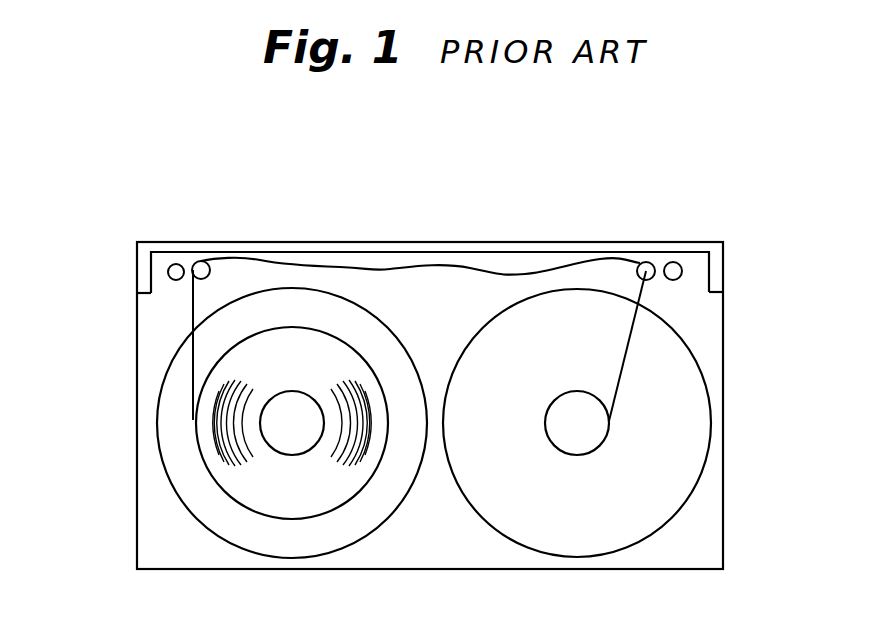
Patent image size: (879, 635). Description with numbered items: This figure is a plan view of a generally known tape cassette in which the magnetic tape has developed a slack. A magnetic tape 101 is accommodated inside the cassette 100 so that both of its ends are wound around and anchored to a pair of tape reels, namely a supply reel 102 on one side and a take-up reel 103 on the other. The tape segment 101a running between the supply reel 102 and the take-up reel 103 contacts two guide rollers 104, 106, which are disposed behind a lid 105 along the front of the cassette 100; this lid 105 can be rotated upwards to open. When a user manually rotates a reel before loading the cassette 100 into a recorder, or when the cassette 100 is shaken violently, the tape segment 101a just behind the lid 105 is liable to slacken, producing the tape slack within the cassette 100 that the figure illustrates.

The cassette 100 is at (137, 366).
The magnetic tape 101 is at (192, 322).
The tape segment 101a is at (381, 268).
The supply reel 102 is at (173, 487).
The take-up reel 103 is at (702, 471).
The guide roller 104 is at (203, 262).
The lid 105 is at (516, 242).
The guide roller 106 is at (646, 271).